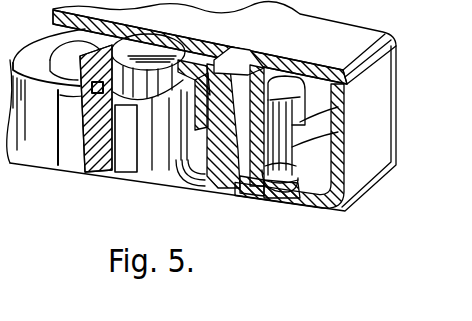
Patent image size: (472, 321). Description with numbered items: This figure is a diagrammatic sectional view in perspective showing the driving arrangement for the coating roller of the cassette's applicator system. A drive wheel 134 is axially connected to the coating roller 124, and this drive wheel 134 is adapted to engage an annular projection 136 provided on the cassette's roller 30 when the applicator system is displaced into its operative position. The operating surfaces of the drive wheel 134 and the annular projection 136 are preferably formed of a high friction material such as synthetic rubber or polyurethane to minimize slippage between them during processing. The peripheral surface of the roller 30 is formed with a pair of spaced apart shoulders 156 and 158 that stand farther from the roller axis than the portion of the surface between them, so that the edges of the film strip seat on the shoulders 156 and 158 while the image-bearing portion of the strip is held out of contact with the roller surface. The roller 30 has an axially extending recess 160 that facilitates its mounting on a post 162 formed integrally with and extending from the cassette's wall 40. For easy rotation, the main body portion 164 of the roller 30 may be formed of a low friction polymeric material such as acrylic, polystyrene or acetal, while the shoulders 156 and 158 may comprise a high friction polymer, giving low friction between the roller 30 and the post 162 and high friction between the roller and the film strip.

The cassette wall 40 is at (345, 32).
The annular projection 136 is at (293, 57).
The drive wheel 134 is at (55, 46).
The coating roller 124 is at (120, 155).
The post 162 is at (231, 47).
The axially extending recess 160 is at (233, 186).
The main body portion 164 is at (247, 203).
The shoulder 156 is at (297, 104).
The roller 30 is at (282, 135).
The shoulder 158 is at (298, 176).